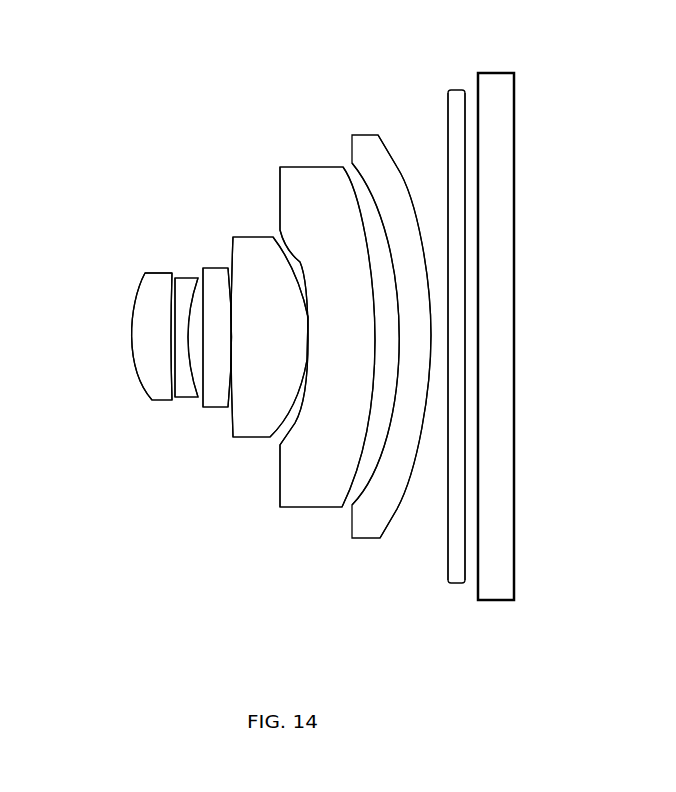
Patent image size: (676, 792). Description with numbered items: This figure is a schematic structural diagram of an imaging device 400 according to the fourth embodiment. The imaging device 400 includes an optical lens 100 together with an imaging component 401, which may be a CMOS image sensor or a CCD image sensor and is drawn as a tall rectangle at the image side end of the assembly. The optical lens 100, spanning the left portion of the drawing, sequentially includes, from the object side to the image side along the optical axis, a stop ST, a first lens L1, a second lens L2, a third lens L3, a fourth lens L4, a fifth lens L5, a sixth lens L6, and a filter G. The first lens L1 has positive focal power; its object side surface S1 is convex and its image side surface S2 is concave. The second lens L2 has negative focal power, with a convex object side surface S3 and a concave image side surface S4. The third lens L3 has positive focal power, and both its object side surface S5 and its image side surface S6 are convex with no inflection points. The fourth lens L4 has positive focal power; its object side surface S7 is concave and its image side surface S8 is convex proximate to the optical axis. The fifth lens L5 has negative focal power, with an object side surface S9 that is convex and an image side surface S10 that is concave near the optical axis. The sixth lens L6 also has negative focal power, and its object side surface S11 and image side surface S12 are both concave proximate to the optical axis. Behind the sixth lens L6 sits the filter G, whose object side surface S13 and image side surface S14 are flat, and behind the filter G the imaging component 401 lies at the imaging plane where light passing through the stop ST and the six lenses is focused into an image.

The imaging device 400 is at (93, 69).
The imaging component 401 is at (493, 100).
The optical lens 100 is at (185, 577).
The first lens L1 is at (148, 346).
The second lens L2 is at (186, 401).
The third lens L3 is at (215, 408).
The fourth lens L4 is at (248, 418).
The fifth lens L5 is at (297, 470).
The sixth lens L6 is at (385, 478).
The stop ST is at (144, 275).
The filter G is at (448, 566).
The object side surface of the first lens S1 is at (140, 297).
The image side surface of the first lens S2 is at (168, 394).
The object side surface of the second lens S3 is at (176, 280).
The image side surface of the second lens S4 is at (196, 398).
The object side surface of the third lens S5 is at (205, 270).
The image side surface of the third lens S6 is at (228, 401).
The object side surface of the fourth lens S7 is at (238, 300).
The image side surface of the fourth lens S8 is at (285, 398).
The object side surface of the fifth lens S9 is at (303, 183).
The image side surface of the fifth lens S10 is at (368, 477).
The object side surface of the sixth lens S11 is at (353, 165).
The image side surface of the sixth lens S12 is at (415, 480).
The object side surface of the filter S13 is at (447, 128).
The image side surface of the filter S14 is at (461, 556).